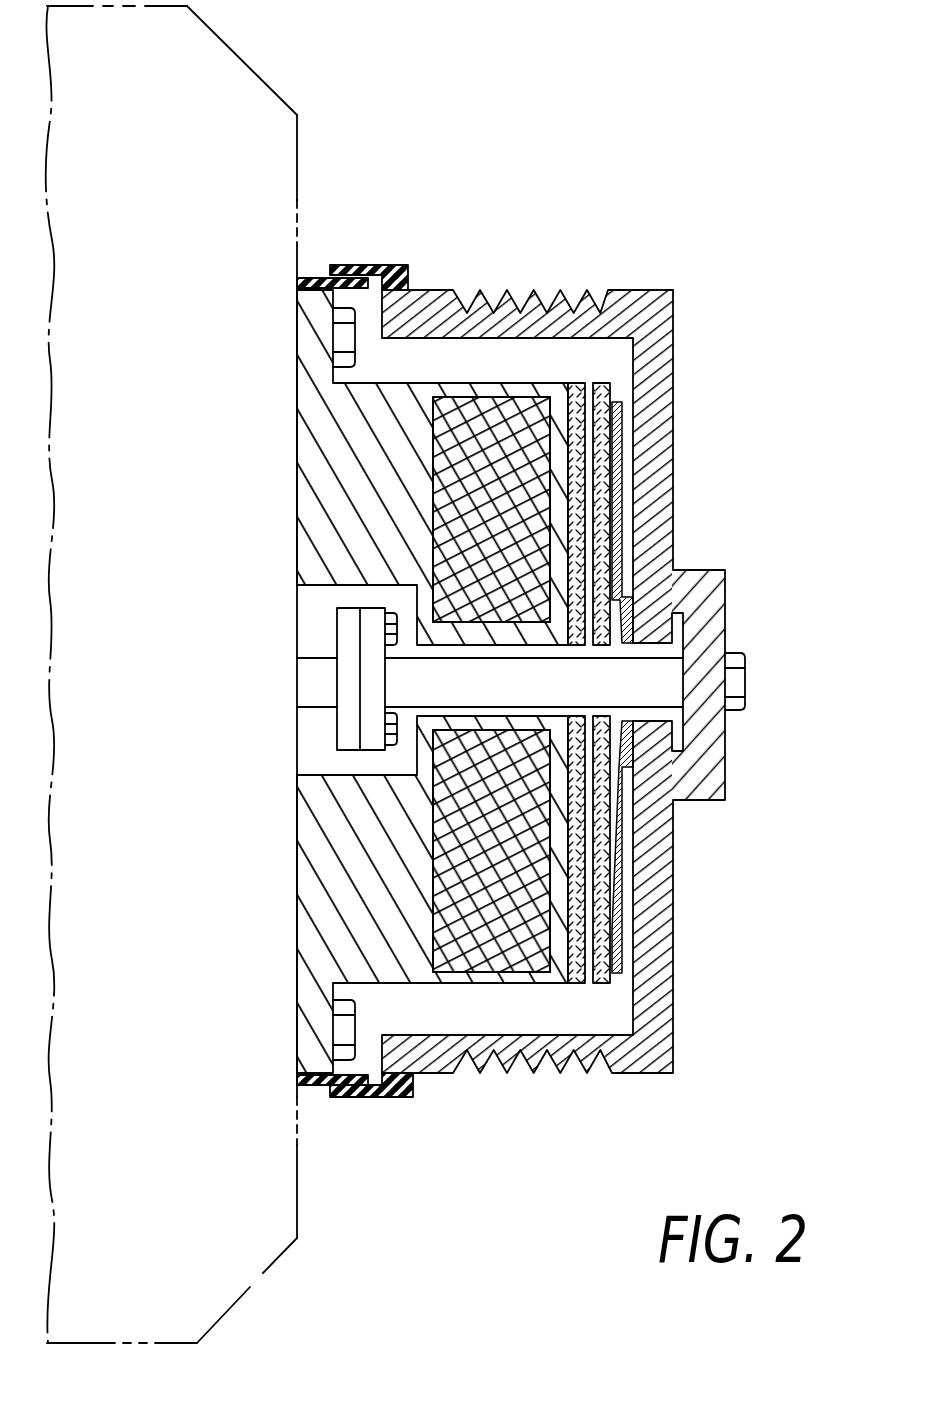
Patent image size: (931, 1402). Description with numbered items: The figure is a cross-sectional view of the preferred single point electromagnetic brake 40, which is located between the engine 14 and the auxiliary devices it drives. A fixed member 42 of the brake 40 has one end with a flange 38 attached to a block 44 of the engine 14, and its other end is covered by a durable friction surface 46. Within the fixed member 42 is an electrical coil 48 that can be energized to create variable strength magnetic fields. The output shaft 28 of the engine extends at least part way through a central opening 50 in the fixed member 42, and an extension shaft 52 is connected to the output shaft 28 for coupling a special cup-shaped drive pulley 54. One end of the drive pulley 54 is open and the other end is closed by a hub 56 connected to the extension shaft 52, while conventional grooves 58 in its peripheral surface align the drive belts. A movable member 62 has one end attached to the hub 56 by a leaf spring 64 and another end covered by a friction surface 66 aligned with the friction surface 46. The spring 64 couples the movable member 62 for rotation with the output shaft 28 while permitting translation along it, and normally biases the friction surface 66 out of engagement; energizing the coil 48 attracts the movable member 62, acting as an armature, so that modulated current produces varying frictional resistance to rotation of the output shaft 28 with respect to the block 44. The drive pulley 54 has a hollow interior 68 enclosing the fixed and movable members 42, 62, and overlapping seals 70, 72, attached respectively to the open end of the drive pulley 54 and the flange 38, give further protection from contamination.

The engine 14 is at (118, 466).
The output shaft 28 is at (312, 688).
The flange 38 is at (346, 1086).
The electromagnetic brake 40 is at (535, 675).
The fixed member 42 is at (313, 895).
The block 44 is at (280, 98).
The friction surface 46 is at (598, 985).
The electrical coil 48 is at (520, 400).
The central opening 50 is at (302, 592).
The extension shaft 52 is at (678, 690).
The drive pulley 54 is at (582, 660).
The hub 56 is at (664, 838).
The grooves 58 is at (530, 300).
The movable member 62 is at (622, 945).
The leaf spring 64 is at (636, 470).
The friction surface 66 is at (584, 370).
The hollow interior 68 is at (461, 1033).
The seal 70 is at (313, 278).
The seal 72 is at (394, 266).